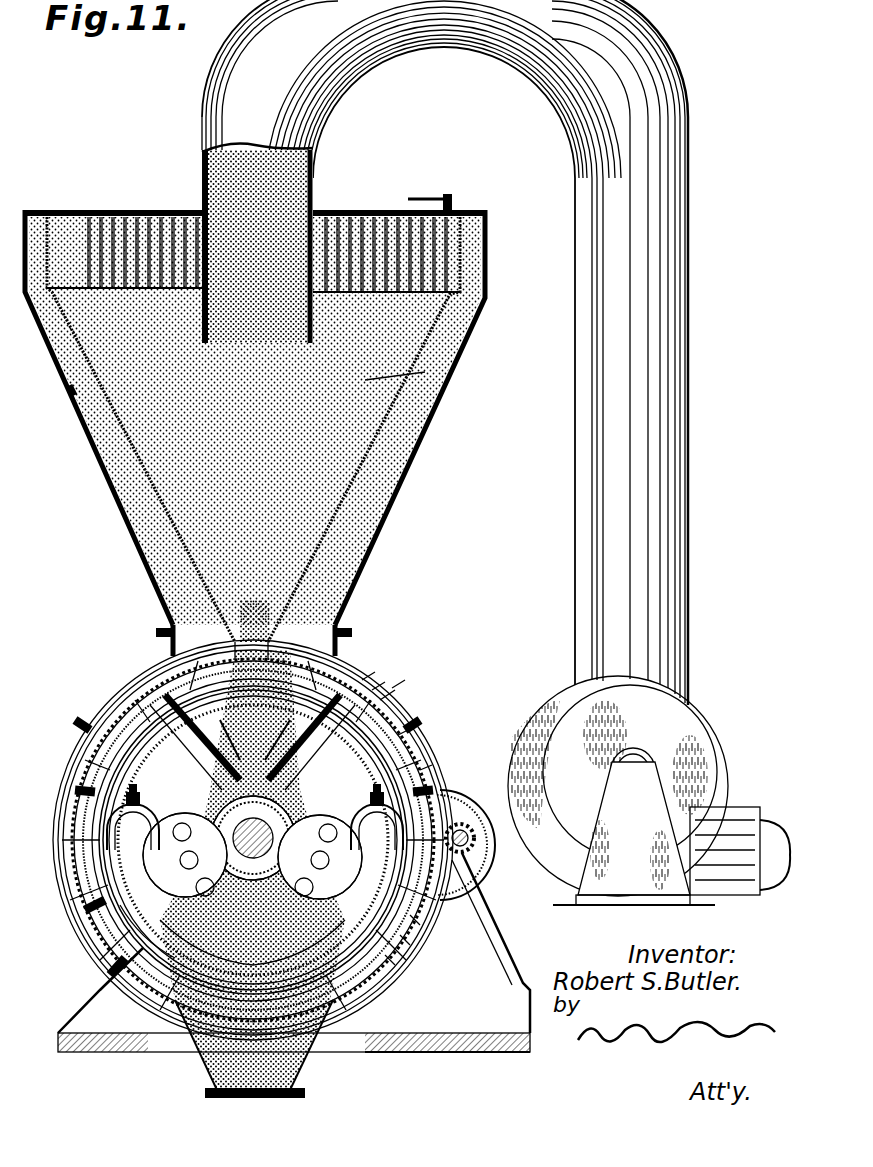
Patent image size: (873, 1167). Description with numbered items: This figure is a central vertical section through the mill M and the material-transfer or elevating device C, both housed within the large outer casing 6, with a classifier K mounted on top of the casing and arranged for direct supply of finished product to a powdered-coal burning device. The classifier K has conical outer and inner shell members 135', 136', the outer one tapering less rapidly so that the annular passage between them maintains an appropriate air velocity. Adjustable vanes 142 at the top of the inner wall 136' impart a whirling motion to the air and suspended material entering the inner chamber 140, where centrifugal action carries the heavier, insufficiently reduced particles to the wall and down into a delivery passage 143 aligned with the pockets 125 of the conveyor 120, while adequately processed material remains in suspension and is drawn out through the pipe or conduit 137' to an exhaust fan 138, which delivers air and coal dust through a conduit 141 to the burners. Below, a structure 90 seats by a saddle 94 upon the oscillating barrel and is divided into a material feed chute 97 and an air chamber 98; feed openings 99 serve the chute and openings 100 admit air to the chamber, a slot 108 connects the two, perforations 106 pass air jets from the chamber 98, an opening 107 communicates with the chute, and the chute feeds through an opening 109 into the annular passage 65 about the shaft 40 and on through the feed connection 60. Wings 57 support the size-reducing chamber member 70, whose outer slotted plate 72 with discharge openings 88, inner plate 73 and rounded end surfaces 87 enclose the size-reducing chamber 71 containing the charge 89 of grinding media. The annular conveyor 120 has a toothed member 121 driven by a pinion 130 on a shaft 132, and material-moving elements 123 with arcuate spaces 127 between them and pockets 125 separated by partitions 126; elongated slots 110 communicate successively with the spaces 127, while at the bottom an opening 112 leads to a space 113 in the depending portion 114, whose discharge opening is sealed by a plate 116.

The pipe or conduit 137' is at (461, 352).
The adjustable vanes 142 is at (405, 262).
The classifier K is at (455, 352).
The inner chamber 140 is at (365, 380).
The inner shell member 136' is at (82, 422).
The outer shell member 135' is at (95, 493).
The delivery passage 143 is at (295, 617).
The perforations 106 is at (171, 650).
The opening 107 is at (345, 662).
The openings 100 is at (182, 668).
The chamber 98 is at (152, 702).
The structure 90 is at (128, 722).
The arcuate pockets or spaces 127 is at (110, 742).
The outer casing 6 is at (78, 770).
The feed openings 99 is at (365, 680).
The material-transfer or elevating device C is at (378, 690).
The partitions 126 is at (395, 688).
The annular conveyor 120 is at (385, 705).
The pockets 125 is at (400, 738).
The inner surfaces 87 is at (103, 828).
The annular toothed member 121 is at (420, 775).
The pinion 130 is at (460, 822).
The shaft 132 is at (481, 845).
The slot 108 is at (195, 760).
The opening 109 is at (295, 790).
The material feed chute 97 is at (318, 760).
The saddle 94 is at (209, 748).
The annular passage 65 is at (225, 815).
The shaft 40 is at (285, 805).
The supporting wings or arms 57 is at (140, 812).
The mill M is at (80, 852).
The inner plate 73 is at (102, 866).
The size-reducing chamber 71 is at (112, 882).
The outer perforated plate 72 is at (116, 902).
The discharge openings 88 is at (118, 922).
The feed connection 60 is at (198, 922).
The elongated slots 110 is at (108, 976).
The opening 112 is at (175, 1052).
The space 113 is at (305, 1058).
The depending portion 114 is at (345, 1052).
The plate 116 is at (208, 1093).
The material-moving elements 123 is at (412, 918).
The size-reducing chamber member 70 is at (403, 938).
The charge of size-reducing media 89 is at (388, 958).
The exhaust fan 138 is at (712, 722).
The conduit 141 is at (768, 812).